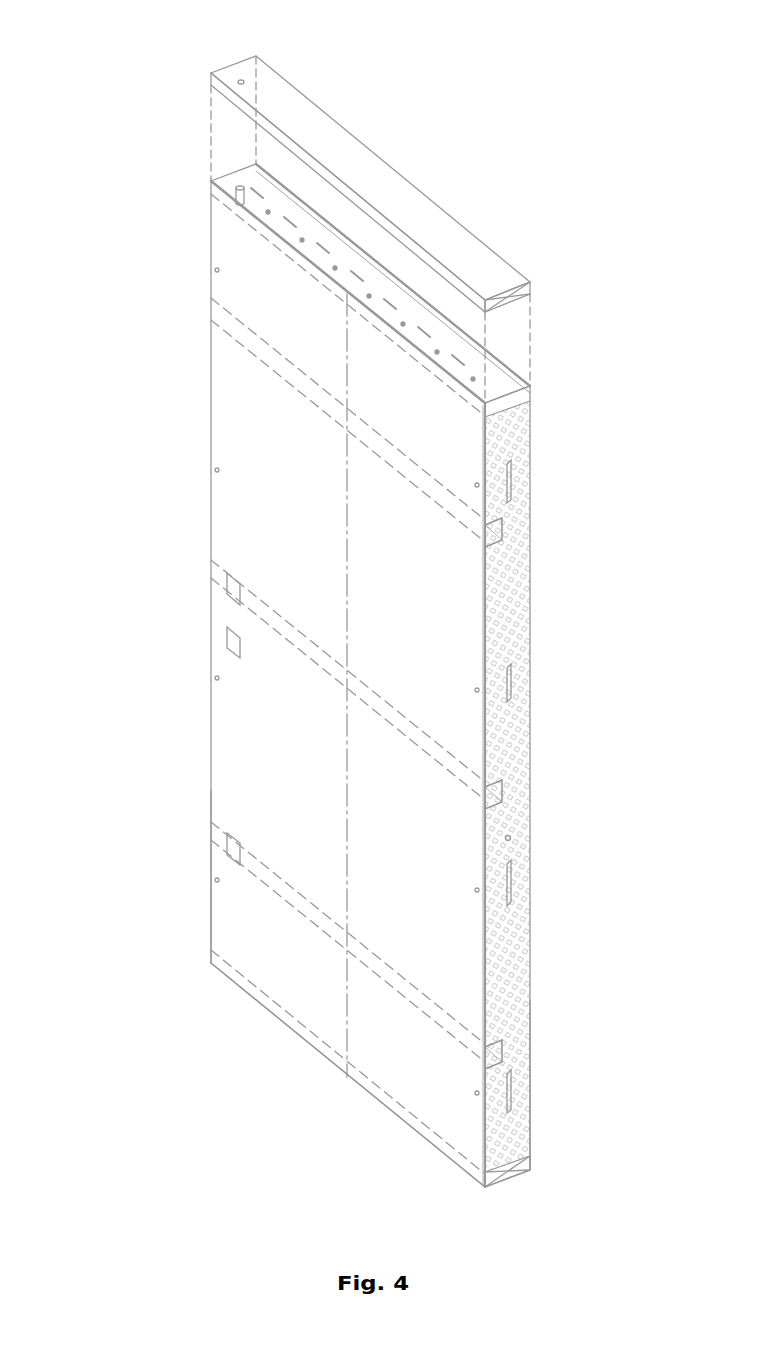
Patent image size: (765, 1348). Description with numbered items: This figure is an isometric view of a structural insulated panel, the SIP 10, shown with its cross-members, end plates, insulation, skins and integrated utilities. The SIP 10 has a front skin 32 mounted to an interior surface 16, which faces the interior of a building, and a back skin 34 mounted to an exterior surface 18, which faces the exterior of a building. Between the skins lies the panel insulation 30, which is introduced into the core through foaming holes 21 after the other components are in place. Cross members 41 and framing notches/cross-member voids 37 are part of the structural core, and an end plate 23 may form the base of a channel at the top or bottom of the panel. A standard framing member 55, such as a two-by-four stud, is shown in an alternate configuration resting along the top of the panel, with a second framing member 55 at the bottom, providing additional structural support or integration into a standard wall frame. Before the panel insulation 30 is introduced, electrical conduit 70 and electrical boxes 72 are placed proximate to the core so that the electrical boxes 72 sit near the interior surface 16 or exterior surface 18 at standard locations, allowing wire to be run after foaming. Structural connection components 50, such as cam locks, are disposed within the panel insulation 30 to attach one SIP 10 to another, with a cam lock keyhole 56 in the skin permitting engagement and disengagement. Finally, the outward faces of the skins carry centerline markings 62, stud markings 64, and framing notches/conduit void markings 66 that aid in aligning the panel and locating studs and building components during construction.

The SIP 10 is at (170, 52).
The interior surface 16 is at (237, 1012).
The exterior surface 18 is at (550, 1112).
The foaming holes 21 is at (477, 375).
The end plate 23 is at (250, 180).
The panel insulation 30 is at (520, 630).
The front skin 32 is at (233, 438).
The back skin 34 is at (579, 780).
The framing notches/cross-member voids 37 is at (503, 793).
The cross members 41 is at (505, 540).
The structural connection components 50 is at (512, 690).
The framing members 55 is at (398, 196).
The cam lock keyhole 56 is at (218, 880).
The centerline markings 62 is at (340, 810).
The stud markings 64 is at (257, 980).
The framing notches/conduit void markings 66 is at (287, 648).
The electrical conduit 70 is at (237, 201).
The electrical boxes 72 is at (228, 597).